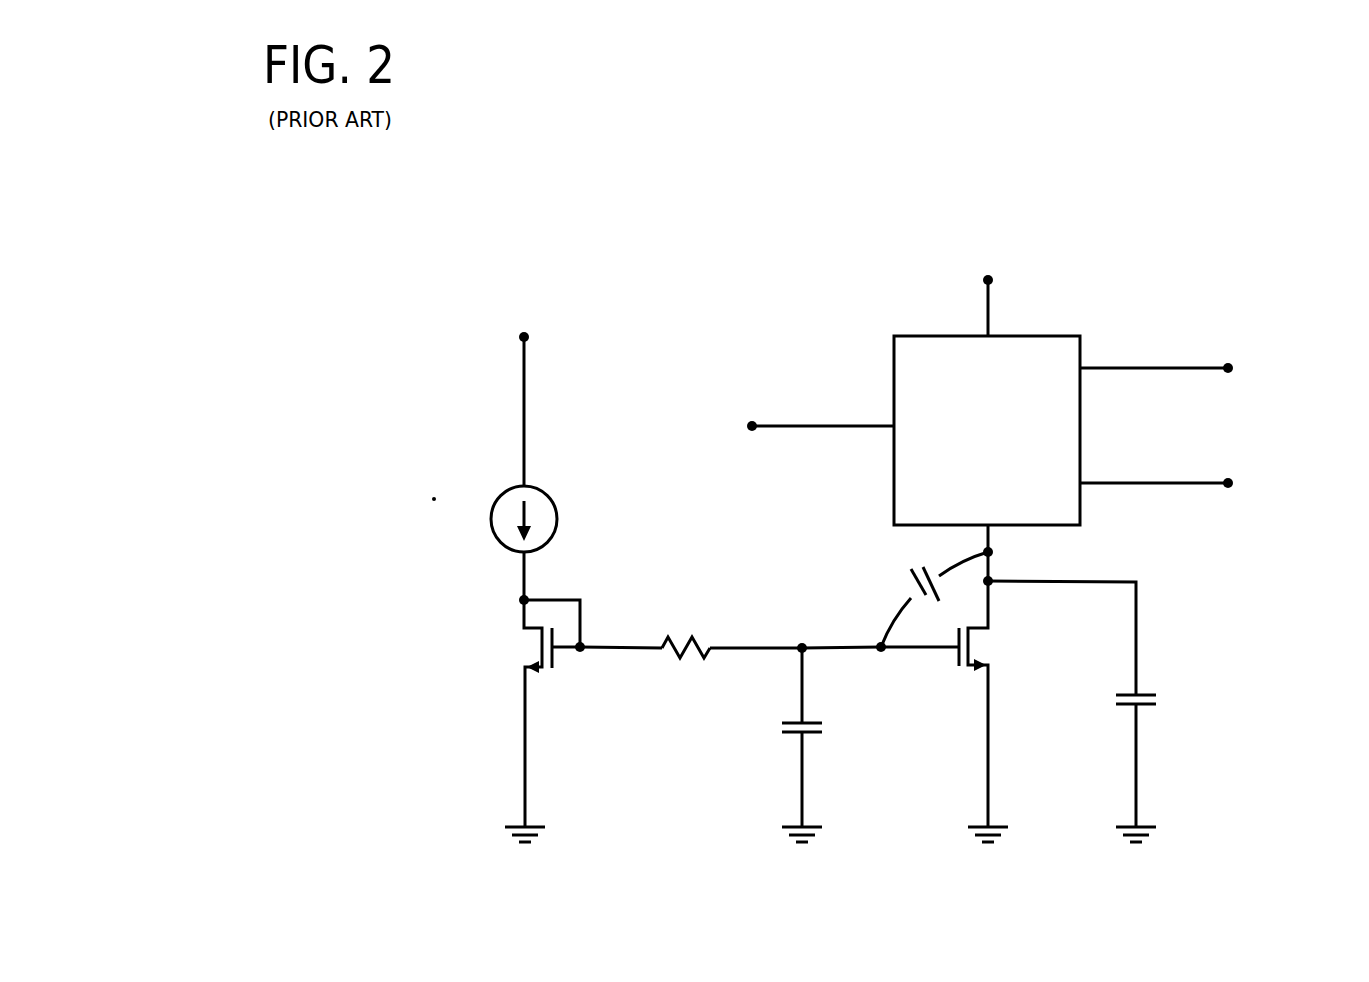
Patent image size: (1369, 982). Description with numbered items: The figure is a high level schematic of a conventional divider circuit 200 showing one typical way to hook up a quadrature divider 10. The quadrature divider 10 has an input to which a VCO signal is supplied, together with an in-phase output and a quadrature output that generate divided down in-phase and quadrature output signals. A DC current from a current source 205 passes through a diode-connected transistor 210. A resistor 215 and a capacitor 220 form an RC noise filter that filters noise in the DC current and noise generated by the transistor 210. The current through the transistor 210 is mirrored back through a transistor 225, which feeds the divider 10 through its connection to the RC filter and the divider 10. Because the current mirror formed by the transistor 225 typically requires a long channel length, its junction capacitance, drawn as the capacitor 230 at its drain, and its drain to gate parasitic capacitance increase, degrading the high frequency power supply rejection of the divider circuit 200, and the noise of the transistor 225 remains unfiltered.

The divider circuit 200 is at (833, 200).
The quadrature divider 10 is at (1008, 398).
The current source 205 is at (493, 509).
The diode-connected transistor 210 is at (515, 721).
The resistor 215 is at (691, 633).
The capacitor 220 is at (773, 745).
The transistor 225 is at (949, 711).
The junction capacitance capacitor 230 is at (1095, 711).